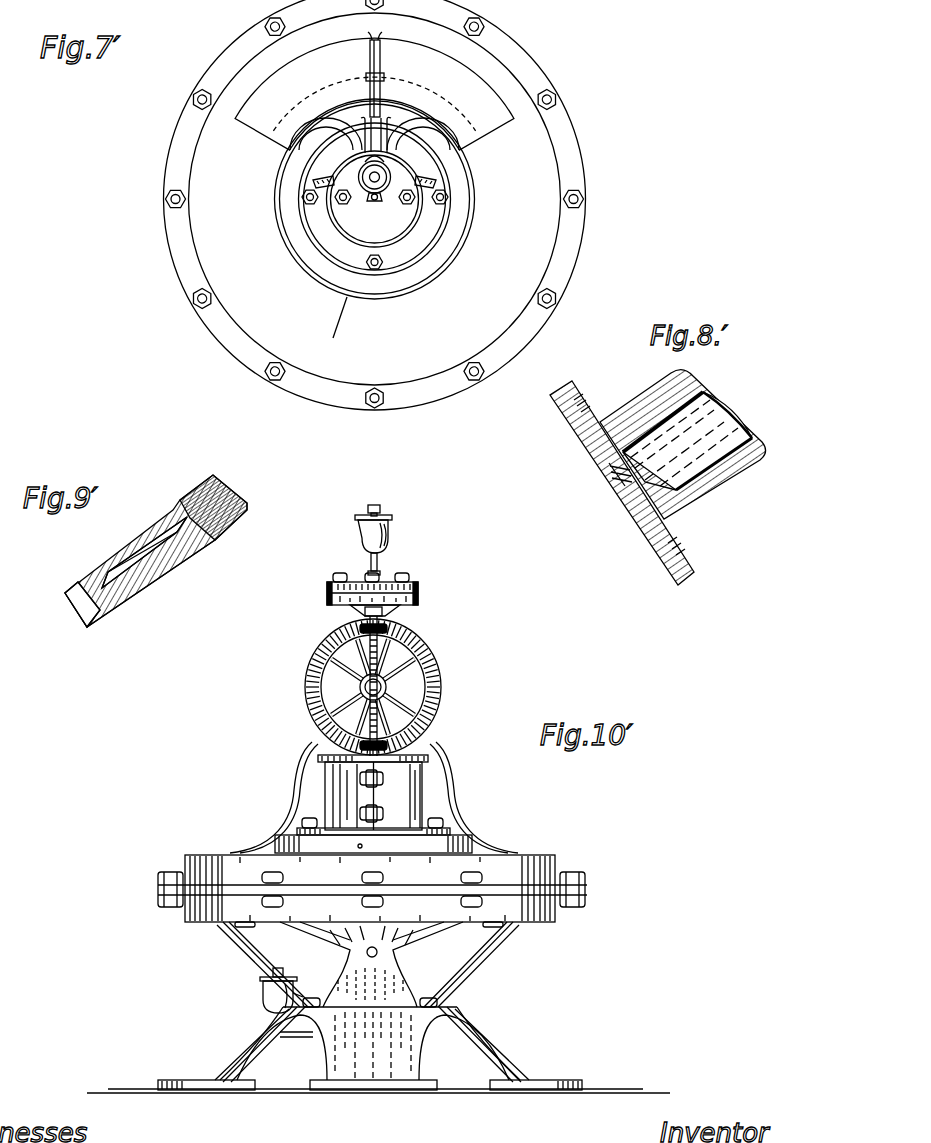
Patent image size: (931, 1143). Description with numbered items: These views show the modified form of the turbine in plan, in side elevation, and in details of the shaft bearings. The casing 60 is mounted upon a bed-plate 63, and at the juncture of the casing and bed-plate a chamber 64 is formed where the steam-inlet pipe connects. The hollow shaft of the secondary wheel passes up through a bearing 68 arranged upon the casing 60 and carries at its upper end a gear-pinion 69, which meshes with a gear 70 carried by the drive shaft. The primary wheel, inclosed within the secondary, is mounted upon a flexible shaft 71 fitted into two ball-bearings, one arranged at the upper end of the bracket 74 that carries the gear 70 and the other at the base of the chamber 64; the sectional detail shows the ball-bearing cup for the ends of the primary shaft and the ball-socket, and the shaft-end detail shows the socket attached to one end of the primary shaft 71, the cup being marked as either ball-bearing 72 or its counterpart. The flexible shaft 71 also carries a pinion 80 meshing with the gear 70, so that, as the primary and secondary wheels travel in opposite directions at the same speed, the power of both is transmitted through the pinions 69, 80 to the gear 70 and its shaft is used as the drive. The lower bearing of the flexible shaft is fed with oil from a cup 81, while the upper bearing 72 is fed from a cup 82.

In FIG. 7′, the casing 60 is at (202, 132).
In FIG. 10′, the casing 60 is at (200, 855).
In FIG. 10′, the bed-plate 63 is at (413, 1047).
In FIG. 10′, the chamber 64 is at (343, 983).
In FIG. 7′, the bearing 68 is at (313, 237).
In FIG. 7′, the gear-pinion 69 is at (413, 238).
In FIG. 10′, the gear-pinion 69 is at (410, 745).
In FIG. 7′, the gear 70 is at (382, 100).
In FIG. 10′, the gear 70 is at (310, 700).
In FIG. 9′, the flexible shaft 71 is at (215, 537).
In FIG. 10′, the flexible shaft 71 is at (366, 664).
In FIG. 7′, the ball-bearing 72 is at (375, 199).
In FIG. 8′, the ball-bearing 72 is at (643, 512).
In FIG. 10′, the ball-bearing 72 is at (418, 586).
In FIG. 7′, the bracket 74 is at (374, 94).
In FIG. 10′, the bracket 74 is at (293, 783).
In FIG. 10′, the pinion 80 is at (393, 618).
In FIG. 10′, the cup 81 is at (262, 994).
In FIG. 7′, the cup 82 is at (360, 174).
In FIG. 10′, the cup 82 is at (392, 530).